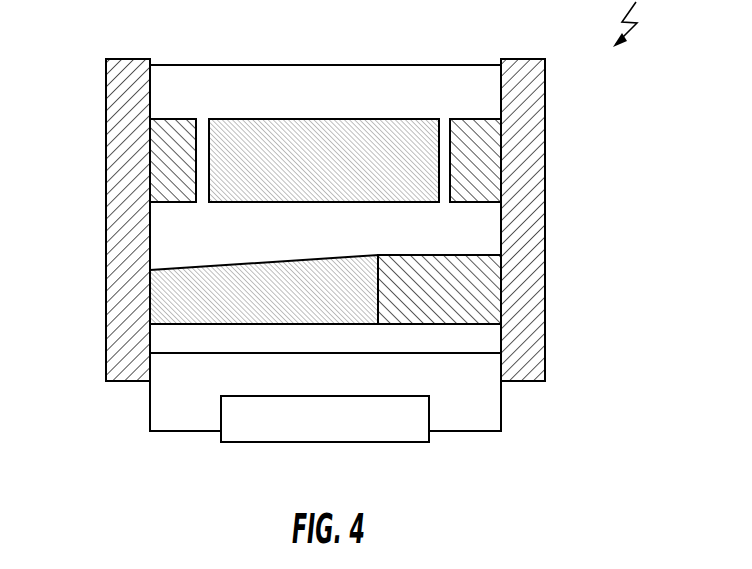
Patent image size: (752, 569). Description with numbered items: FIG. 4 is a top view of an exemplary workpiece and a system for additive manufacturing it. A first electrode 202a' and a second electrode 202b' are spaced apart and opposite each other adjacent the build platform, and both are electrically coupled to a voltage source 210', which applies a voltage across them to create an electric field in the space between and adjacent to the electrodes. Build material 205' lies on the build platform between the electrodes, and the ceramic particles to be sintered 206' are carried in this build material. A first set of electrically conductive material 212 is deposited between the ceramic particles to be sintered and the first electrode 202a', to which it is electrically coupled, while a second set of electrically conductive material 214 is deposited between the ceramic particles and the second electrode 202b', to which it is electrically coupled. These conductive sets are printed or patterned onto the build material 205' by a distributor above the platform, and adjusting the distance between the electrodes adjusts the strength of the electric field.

The build material 205' is at (325, 218).
The electrode 206' is at (273, 165).
The first set of electrically conductive material 212 is at (192, 168).
The second set of electrically conductive material 214 is at (457, 281).
The voltage source 210' is at (325, 419).
The first electrode 202a' is at (94, 248).
The second electrode 202b' is at (559, 248).